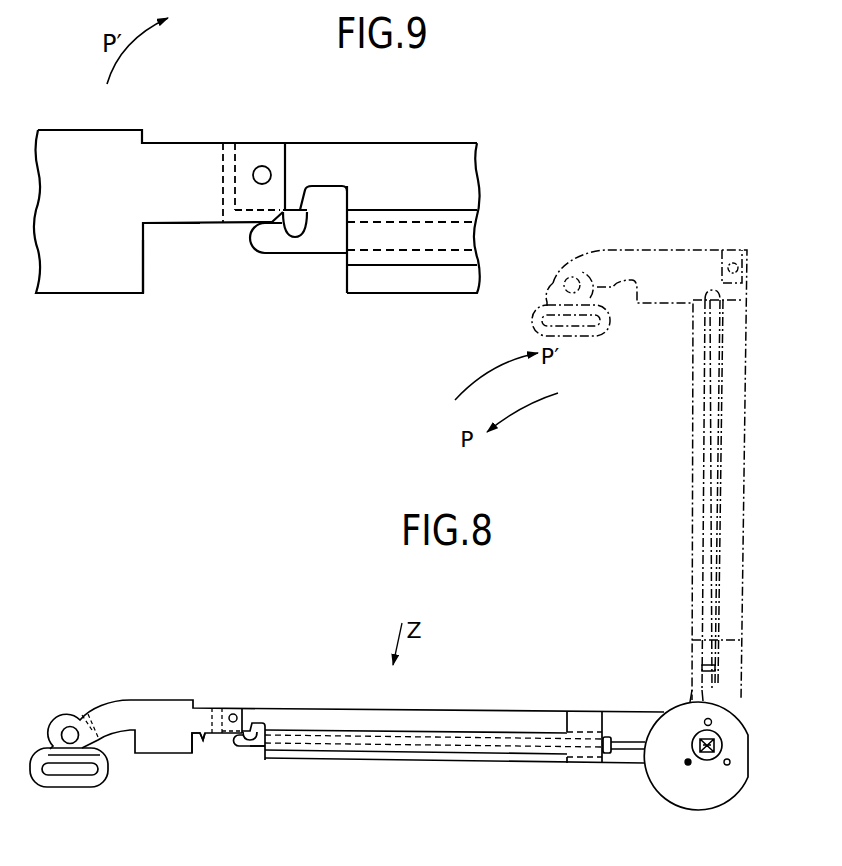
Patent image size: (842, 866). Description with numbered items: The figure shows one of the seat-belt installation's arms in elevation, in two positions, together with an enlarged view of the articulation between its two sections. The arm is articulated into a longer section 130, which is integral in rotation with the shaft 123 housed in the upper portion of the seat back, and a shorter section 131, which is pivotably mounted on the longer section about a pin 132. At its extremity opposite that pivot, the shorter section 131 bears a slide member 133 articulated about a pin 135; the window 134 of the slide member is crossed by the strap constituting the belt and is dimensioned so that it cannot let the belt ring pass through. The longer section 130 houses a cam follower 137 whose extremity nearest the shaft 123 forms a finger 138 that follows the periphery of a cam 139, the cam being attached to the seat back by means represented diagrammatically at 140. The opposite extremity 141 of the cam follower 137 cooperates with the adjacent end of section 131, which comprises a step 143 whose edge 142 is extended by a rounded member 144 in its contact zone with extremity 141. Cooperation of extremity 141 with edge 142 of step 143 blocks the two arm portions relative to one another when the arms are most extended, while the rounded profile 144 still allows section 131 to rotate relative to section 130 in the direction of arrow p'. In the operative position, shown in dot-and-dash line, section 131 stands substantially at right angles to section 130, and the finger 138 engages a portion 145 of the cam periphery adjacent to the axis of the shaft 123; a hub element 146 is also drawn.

In FIG. 8, the shaft 123 is at (686, 764).
In FIG. 9, the longer section 130 is at (437, 141).
In FIG. 8, the longer section 130 is at (528, 708).
In FIG. 9, the shorter section 131 is at (117, 121).
In FIG. 8, the shorter section 131 is at (138, 692).
In FIG. 9, the pin 132 is at (264, 166).
In FIG. 8, the pin 132 is at (237, 714).
In FIG. 8, the slide member 133 is at (104, 778).
In FIG. 8, the window 134 is at (65, 773).
In FIG. 8, the pin 135 is at (70, 726).
In FIG. 9, the cam follower 137 is at (328, 256).
In FIG. 8, the cam follower 137 is at (258, 749).
In FIG. 8, the finger 138 is at (615, 751).
In FIG. 8, the cam 139 is at (725, 788).
In FIG. 8, the attachment means 140 is at (728, 759).
In FIG. 9, the extremity 141 is at (270, 254).
In FIG. 8, the extremity 141 is at (243, 746).
In FIG. 9, the edge 142 is at (174, 232).
In FIG. 8, the edge 142 is at (201, 735).
In FIG. 9, the step 143 is at (182, 260).
In FIG. 8, the step 143 is at (207, 750).
In FIG. 9, the rounded member 144 is at (308, 220).
In FIG. 8, the rounded member 144 is at (253, 741).
In FIG. 8, the portion of the cam periphery 145 is at (695, 700).
In FIG. 8, the bolt 146 is at (690, 807).